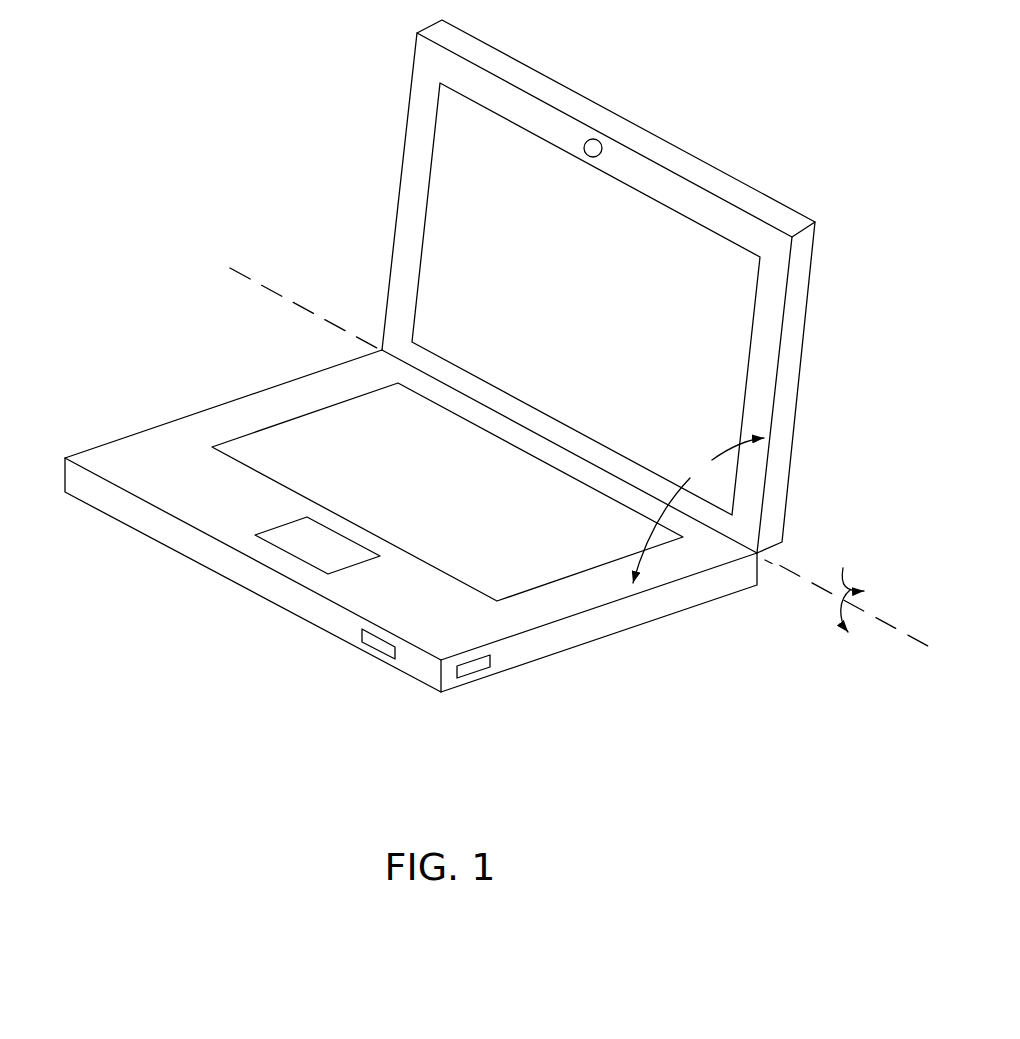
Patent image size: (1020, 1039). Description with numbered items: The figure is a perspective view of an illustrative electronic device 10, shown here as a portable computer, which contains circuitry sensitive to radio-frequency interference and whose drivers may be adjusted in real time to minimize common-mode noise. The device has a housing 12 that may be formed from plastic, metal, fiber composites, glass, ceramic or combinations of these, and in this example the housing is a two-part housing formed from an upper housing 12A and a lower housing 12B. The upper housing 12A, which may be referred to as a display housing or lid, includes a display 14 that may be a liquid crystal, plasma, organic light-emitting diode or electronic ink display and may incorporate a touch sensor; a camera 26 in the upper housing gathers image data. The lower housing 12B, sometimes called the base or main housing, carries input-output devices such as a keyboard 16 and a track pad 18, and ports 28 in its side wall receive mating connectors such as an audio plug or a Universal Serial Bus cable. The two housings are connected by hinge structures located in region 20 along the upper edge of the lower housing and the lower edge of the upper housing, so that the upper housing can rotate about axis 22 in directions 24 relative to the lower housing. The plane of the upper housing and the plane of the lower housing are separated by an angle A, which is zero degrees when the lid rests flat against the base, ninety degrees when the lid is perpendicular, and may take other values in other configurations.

The electronic device 10 is at (779, 78).
The housing 12 is at (374, 208).
The upper housing 12A is at (837, 227).
The lower housing 12B is at (768, 600).
The display 14 is at (448, 137).
The keyboard 16 is at (267, 438).
The track pad 18 is at (302, 548).
The hinge region 20 is at (390, 371).
The axis 22 is at (262, 287).
The directions 24 is at (847, 589).
The camera 26 is at (603, 150).
The ports 28 is at (380, 653).
The angle A is at (698, 510).